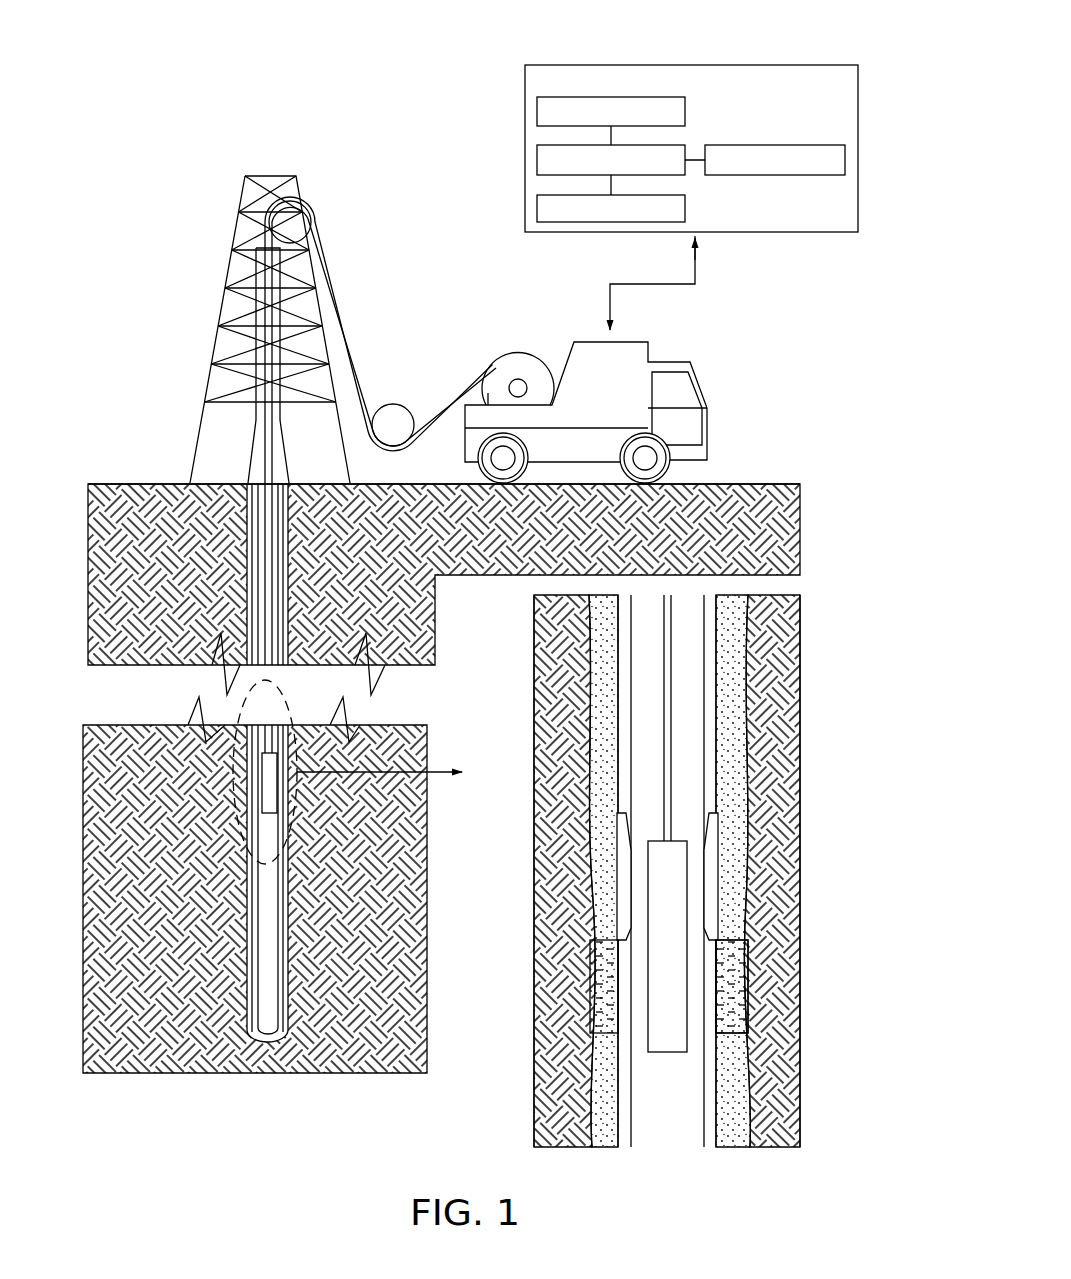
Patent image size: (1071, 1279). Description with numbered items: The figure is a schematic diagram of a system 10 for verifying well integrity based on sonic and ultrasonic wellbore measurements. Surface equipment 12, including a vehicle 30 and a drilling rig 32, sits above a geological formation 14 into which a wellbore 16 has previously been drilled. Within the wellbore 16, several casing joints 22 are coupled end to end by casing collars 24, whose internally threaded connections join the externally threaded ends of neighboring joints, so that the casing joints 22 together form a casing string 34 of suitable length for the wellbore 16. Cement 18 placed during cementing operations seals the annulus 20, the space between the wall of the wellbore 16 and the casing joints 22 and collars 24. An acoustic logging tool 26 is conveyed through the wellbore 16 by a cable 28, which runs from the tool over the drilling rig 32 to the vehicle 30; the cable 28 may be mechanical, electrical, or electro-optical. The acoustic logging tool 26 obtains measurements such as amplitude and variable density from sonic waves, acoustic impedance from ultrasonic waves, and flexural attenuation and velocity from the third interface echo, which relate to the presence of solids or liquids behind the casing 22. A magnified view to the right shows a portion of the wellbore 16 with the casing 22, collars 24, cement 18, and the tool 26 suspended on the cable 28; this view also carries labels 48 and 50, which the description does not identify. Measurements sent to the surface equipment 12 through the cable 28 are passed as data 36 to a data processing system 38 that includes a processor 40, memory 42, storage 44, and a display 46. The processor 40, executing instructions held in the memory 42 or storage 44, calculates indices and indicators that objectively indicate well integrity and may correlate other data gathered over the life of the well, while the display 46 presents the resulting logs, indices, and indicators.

The system 10 is at (60, 1040).
The surface equipment 12 is at (457, 287).
The geological formation 14 is at (98, 833).
The wellbore 16 is at (238, 535).
The cement 18 is at (238, 562).
The annulus 20 is at (238, 605).
The casing joints 22 is at (238, 912).
The casing collars 24 is at (300, 982).
The acoustic logging tool 26 is at (258, 770).
The cable 28 is at (364, 320).
The vehicle 30 is at (589, 336).
The drilling rig 32 is at (220, 247).
The casing string 34 is at (703, 986).
The data 36 is at (696, 264).
The data processing system 38 is at (700, 65).
The processor 40 is at (665, 145).
The memory 42 is at (537, 111).
The storage 44 is at (686, 206).
The display 46 is at (780, 145).
The formation 48 is at (735, 724).
The fluid 50 is at (735, 975).